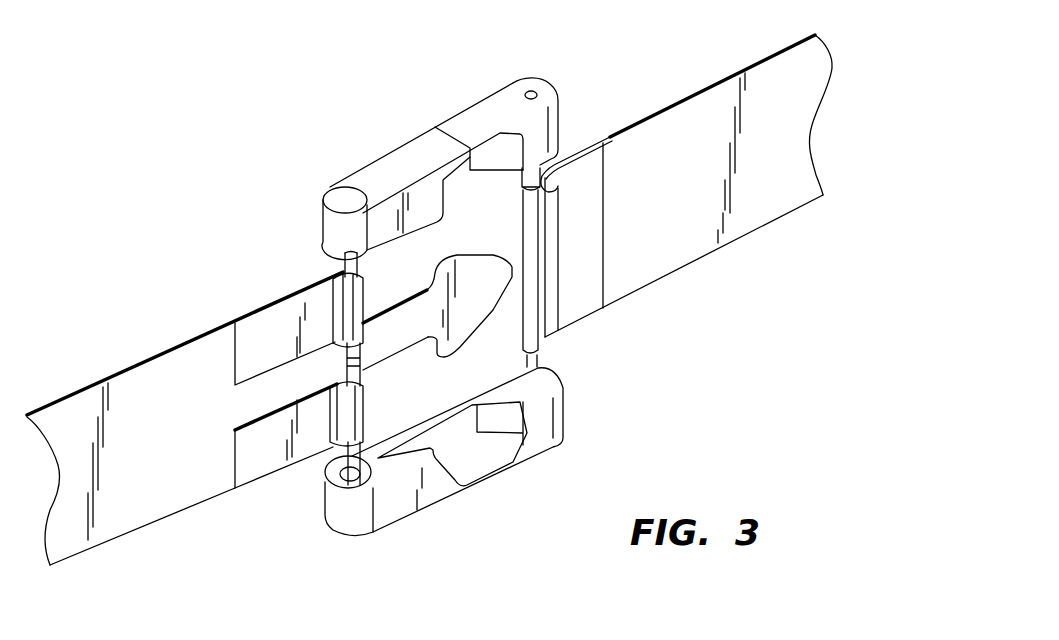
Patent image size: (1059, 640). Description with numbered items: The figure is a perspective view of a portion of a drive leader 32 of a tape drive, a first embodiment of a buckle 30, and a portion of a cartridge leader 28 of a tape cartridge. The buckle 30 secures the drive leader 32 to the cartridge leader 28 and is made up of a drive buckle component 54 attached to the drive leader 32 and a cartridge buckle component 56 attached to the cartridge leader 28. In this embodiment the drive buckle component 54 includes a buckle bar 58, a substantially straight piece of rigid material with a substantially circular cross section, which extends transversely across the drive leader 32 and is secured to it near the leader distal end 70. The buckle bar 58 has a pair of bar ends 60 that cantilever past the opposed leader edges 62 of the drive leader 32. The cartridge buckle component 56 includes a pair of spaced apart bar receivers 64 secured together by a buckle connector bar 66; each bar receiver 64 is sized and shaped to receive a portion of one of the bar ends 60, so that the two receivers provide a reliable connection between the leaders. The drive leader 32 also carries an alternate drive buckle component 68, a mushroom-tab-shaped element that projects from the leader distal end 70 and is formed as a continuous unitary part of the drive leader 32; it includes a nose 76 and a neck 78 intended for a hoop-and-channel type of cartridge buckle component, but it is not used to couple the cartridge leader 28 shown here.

The cartridge leader 28 is at (780, 51).
The buckle 30 is at (507, 50).
The drive leader 32 is at (131, 367).
The drive buckle component 54 is at (345, 270).
The cartridge buckle component 56 is at (346, 195).
The buckle bar 58 is at (333, 447).
The bar ends 60 is at (343, 257).
The leader edges 62 is at (217, 329).
The bar receivers 64 is at (502, 157).
The buckle connector bar 66 is at (537, 358).
The alternate drive buckle component 68 is at (489, 297).
The leader distal end 70 is at (365, 400).
The nose 76 is at (483, 266).
The neck 78 is at (405, 318).